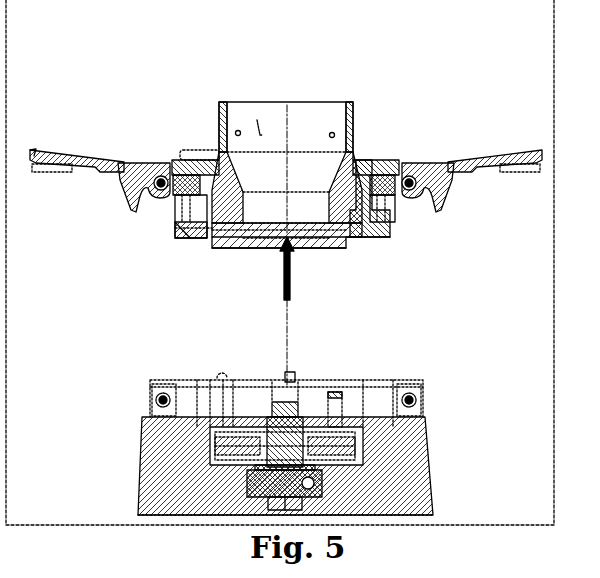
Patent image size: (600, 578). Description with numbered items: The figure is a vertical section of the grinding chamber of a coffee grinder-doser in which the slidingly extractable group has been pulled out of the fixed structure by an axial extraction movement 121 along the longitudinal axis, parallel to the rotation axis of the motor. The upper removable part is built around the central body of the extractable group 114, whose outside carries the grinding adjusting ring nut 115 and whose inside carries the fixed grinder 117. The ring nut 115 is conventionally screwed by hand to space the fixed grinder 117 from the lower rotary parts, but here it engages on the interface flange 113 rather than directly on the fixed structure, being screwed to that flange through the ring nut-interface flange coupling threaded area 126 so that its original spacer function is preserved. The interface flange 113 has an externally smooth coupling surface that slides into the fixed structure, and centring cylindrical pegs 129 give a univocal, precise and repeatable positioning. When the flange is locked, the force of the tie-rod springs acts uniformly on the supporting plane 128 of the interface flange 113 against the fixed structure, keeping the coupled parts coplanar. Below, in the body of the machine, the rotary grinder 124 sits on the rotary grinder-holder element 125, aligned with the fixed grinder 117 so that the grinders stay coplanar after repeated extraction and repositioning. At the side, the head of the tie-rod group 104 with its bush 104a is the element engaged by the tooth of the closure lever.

The head of the tie-rod group 104 is at (348, 388).
The bush 104a is at (413, 351).
The interface flange 113 is at (180, 230).
The central body of the extractable group 114 is at (222, 125).
The grinding adjusting ring nut 115 is at (363, 170).
The fixed grinder 117 is at (373, 245).
The axial extraction movement 121 is at (298, 257).
The rotary grinder 124 is at (235, 425).
The rotary grinder-holder element 125 is at (302, 417).
The ring nut-interface flange coupling threaded area 126 is at (343, 160).
The supporting plane of the interface flange 128 is at (240, 435).
The centring cylindrical peg 129 is at (352, 380).